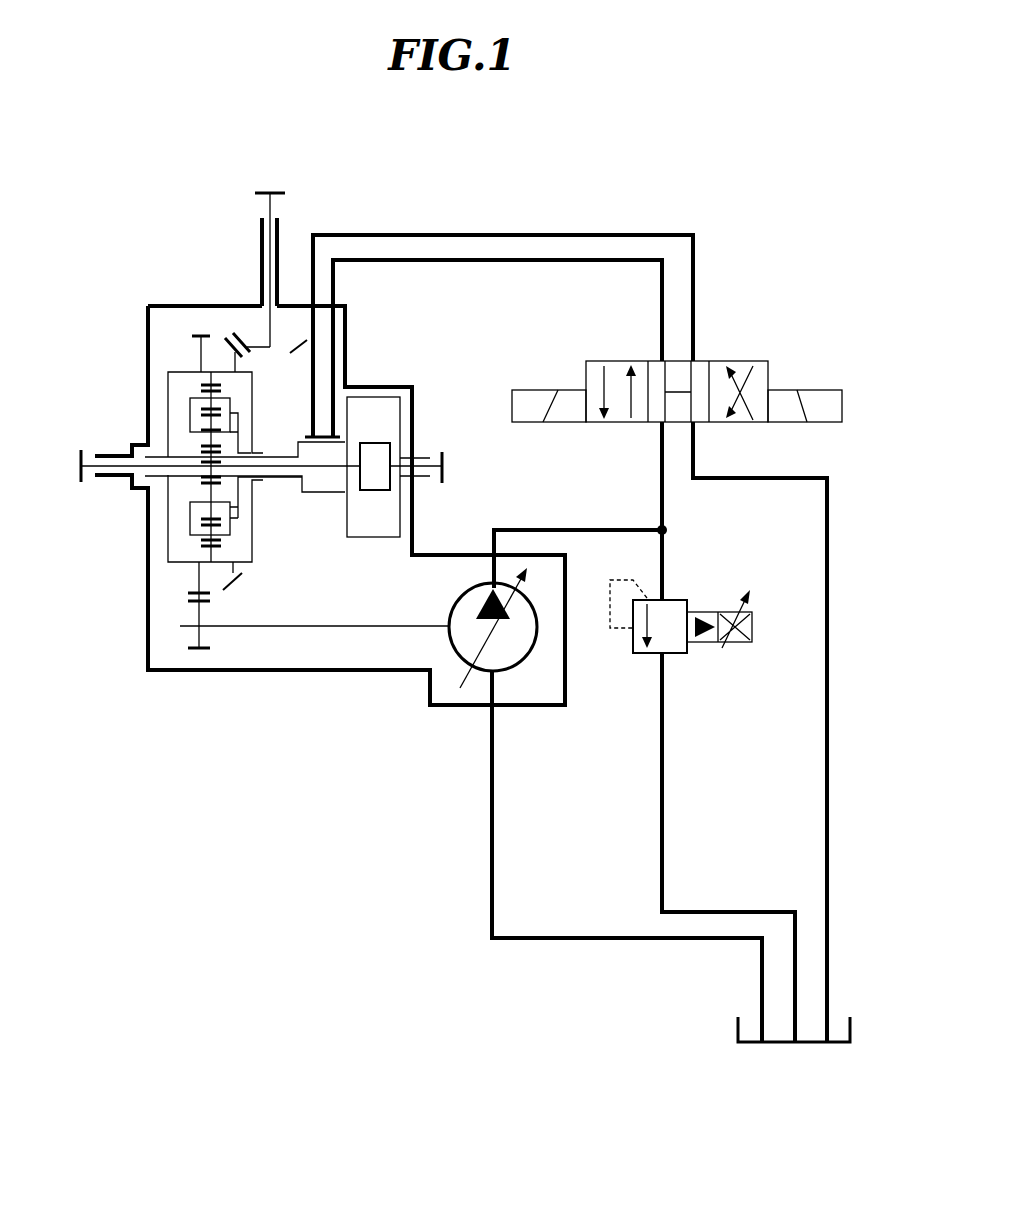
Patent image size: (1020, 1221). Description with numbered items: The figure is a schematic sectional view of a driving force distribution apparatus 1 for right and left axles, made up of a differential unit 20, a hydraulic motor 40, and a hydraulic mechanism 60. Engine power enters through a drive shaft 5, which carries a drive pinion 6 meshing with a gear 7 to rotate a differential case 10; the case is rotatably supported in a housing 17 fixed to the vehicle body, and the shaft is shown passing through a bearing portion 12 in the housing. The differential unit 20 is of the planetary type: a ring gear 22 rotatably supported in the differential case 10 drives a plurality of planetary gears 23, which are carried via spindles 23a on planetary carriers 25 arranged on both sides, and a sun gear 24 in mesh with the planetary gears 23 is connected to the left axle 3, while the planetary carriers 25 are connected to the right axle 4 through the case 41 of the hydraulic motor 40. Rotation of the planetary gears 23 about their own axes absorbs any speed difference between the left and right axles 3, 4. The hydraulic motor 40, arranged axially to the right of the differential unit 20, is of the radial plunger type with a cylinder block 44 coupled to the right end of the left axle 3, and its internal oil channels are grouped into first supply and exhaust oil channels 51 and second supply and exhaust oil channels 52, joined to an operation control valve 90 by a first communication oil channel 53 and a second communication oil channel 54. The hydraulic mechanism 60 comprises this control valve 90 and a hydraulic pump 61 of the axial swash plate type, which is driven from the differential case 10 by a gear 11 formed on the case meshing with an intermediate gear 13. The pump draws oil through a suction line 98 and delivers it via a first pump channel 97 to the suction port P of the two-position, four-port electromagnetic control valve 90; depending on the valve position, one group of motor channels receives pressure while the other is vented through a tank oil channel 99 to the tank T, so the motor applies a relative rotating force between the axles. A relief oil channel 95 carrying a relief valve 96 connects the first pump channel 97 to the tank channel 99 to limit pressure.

The driving force distribution apparatus 1 is at (133, 262).
The left axle 3 is at (77, 458).
The right axle 4 is at (446, 456).
The drive shaft 5 is at (267, 208).
The drive pinion 6 is at (247, 345).
The gear 7 is at (227, 343).
The differential case 10 is at (168, 387).
The gear 11 is at (197, 582).
The bearing 12 is at (260, 237).
The intermediate gear 13 is at (201, 612).
The housing 17 is at (207, 427).
The differential unit 20 is at (158, 514).
The ring gear 22 is at (198, 350).
The planetary gears 23 is at (190, 427).
The spindles 23a is at (240, 428).
The sun gear 24 is at (207, 462).
The planetary carriers 25 is at (240, 508).
The hydraulic motor 40 is at (411, 422).
The case 41 is at (368, 398).
The cylinder block 44 is at (390, 447).
The first supply and exhaust oil channels 51 is at (333, 315).
The second supply and exhaust oil channels 52 is at (311, 322).
The first communication oil channel 53 is at (660, 317).
The second communication oil channel 54 is at (695, 283).
The hydraulic mechanism 60 is at (781, 236).
The hydraulic pump 61 is at (449, 613).
The operation control valve 90 is at (770, 372).
The relief oil channel 95 is at (660, 793).
The relief valve 96 is at (680, 656).
The first pump channel 97 is at (545, 530).
The suction passage 98 is at (490, 783).
The tank oil channel 99 is at (829, 852).
The suction port P is at (660, 480).
The tank T is at (738, 1032).